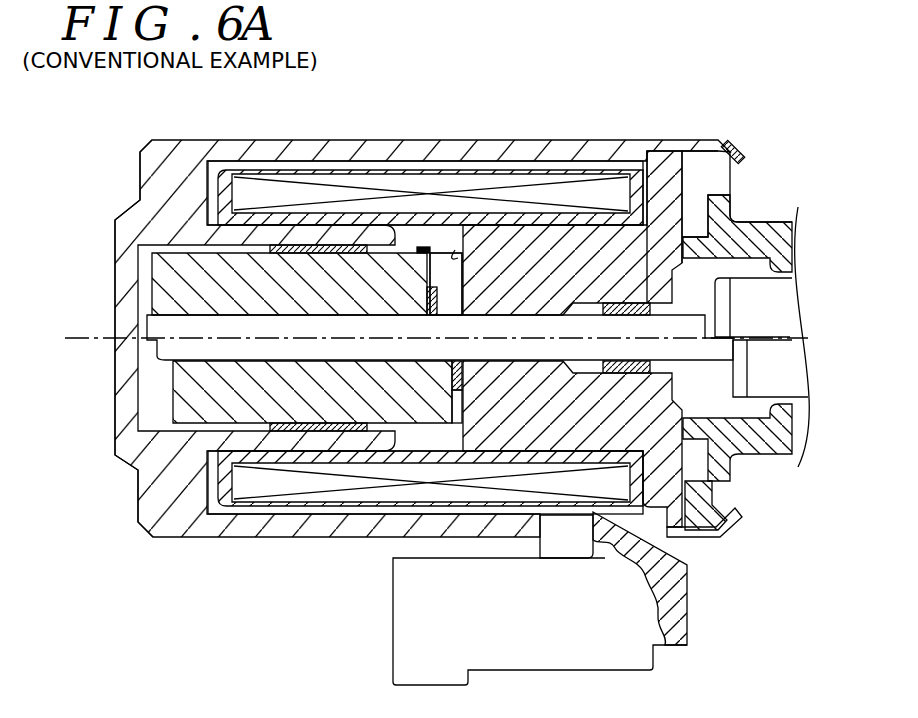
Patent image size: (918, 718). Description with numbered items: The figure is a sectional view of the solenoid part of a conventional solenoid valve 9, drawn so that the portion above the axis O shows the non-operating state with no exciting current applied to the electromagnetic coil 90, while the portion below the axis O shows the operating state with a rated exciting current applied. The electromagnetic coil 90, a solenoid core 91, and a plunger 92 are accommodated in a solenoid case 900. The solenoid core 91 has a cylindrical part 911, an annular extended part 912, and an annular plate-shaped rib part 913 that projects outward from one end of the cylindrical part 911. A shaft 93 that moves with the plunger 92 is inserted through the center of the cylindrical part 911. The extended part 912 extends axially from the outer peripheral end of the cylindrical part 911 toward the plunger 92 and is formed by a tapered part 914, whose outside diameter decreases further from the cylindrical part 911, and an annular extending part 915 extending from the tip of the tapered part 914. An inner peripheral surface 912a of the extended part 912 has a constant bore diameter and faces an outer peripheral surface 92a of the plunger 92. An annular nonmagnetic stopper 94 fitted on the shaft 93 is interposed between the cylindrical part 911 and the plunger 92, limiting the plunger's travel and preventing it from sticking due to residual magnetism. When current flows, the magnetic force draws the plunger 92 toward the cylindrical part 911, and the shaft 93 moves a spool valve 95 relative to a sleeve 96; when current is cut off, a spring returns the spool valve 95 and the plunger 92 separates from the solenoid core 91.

The solenoid valve 9 is at (162, 125).
The solenoid case 900 is at (142, 173).
The electromagnetic coil 90 is at (285, 192).
The solenoid core 91 is at (698, 168).
The cylindrical part 911 is at (540, 273).
The extended part 912 is at (460, 106).
The inner peripheral surface 912a is at (455, 250).
The rib part 913 is at (665, 177).
The tapered part 914 is at (458, 250).
The extending part 915 is at (424, 248).
The plunger 92 is at (185, 288).
The outer peripheral surface 92a is at (427, 250).
The shaft 93 is at (165, 330).
The stopper 94 is at (453, 390).
The spool valve 95 is at (748, 293).
The sleeve 96 is at (757, 442).
The axis O is at (88, 342).